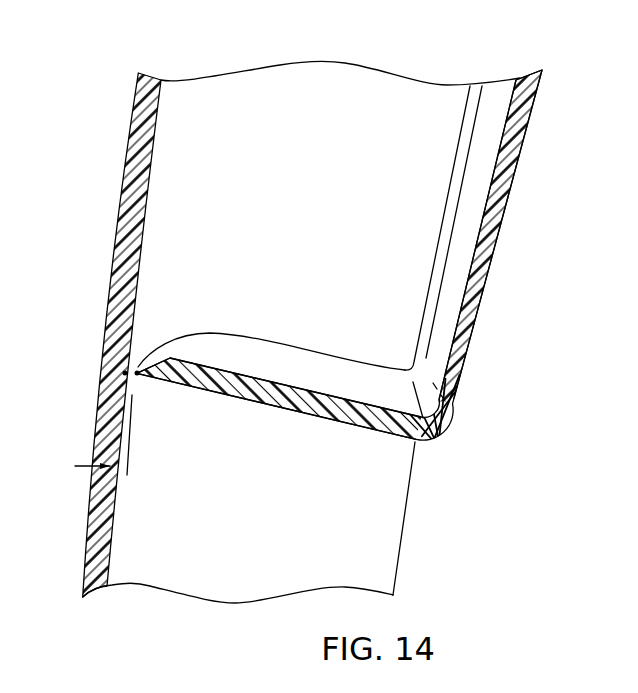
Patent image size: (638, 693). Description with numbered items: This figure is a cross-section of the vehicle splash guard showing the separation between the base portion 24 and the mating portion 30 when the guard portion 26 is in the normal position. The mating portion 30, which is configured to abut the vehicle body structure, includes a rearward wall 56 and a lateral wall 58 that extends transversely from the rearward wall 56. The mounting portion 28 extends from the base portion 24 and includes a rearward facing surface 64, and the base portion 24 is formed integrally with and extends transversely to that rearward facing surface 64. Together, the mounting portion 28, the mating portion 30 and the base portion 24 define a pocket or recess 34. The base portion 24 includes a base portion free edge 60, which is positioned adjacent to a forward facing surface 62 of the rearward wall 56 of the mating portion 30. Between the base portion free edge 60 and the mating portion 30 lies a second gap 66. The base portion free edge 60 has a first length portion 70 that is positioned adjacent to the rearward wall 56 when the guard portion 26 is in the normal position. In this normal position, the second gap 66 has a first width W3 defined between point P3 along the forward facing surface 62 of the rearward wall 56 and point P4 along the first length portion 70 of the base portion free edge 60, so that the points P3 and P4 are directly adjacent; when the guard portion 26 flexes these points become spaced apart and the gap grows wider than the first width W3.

The base portion 24 is at (337, 378).
The guard portion 26 is at (358, 511).
The mounting portion 28 is at (510, 163).
The mating portion 30 is at (134, 133).
The recess 34 is at (316, 280).
The rearward wall 56 is at (125, 252).
The lateral wall 58 is at (410, 128).
The base portion free edge 60 is at (188, 338).
The forward facing surface 62 is at (148, 190).
The rearward facing surface 64 is at (461, 219).
The second gap 66 is at (137, 355).
The first length portion 70 is at (133, 382).
The point P3 is at (125, 373).
The point P4 is at (137, 377).
The first width W3 is at (136, 467).